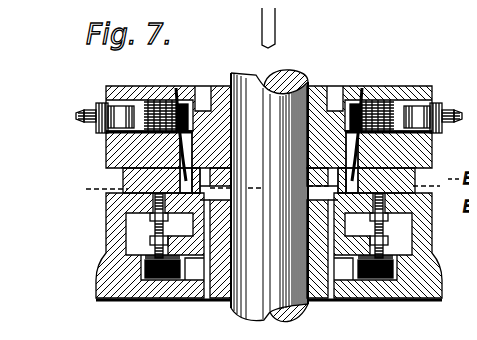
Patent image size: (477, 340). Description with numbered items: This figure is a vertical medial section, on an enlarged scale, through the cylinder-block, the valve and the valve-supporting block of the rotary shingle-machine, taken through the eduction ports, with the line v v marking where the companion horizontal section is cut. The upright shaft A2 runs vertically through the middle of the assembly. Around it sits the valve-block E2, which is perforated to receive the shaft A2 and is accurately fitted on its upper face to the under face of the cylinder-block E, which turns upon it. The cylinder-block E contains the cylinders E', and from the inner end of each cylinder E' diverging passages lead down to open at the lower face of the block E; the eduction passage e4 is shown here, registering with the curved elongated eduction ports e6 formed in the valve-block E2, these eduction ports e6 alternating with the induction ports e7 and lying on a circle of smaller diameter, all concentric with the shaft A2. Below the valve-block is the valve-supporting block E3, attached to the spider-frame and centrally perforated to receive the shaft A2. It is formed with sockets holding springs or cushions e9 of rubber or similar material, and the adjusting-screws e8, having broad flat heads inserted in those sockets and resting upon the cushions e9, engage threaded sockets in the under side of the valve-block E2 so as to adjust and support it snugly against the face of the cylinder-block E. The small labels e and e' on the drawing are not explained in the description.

The cylinder-block E is at (269, 177).
The cylinders E' is at (269, 110).
The valve-block E2 is at (113, 162).
The valve-supporting block E3 is at (99, 241).
The shaft A2 is at (269, 196).
The valve stem plug e' is at (269, 107).
The valve rod e is at (271, 120).
The eduction passage e4 is at (182, 140).
The eduction ports e6 is at (178, 173).
The induction ports e7 is at (158, 220).
The adjusting-screws e8 is at (176, 249).
The springs or cushions e9 is at (360, 253).
The section line v is at (260, 187).